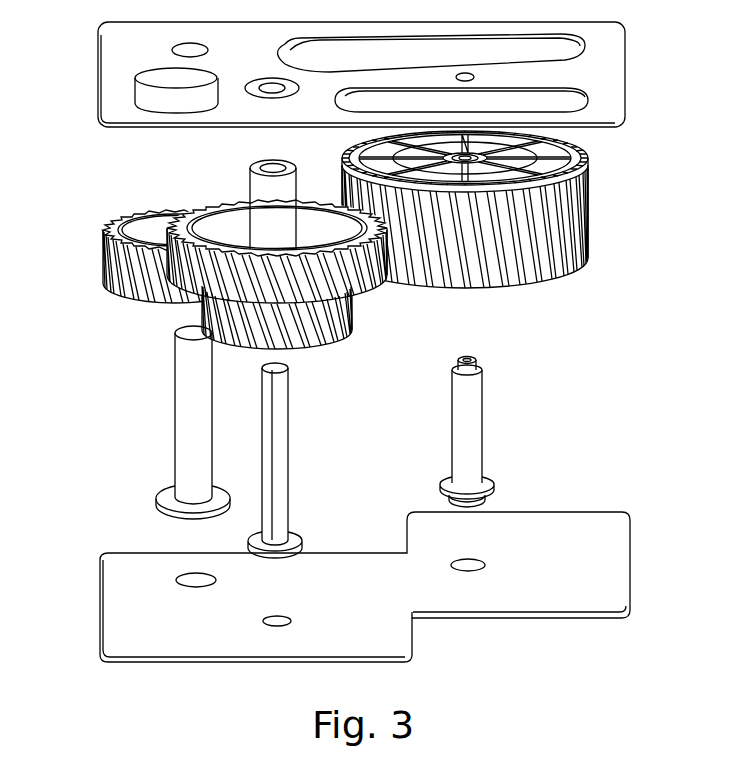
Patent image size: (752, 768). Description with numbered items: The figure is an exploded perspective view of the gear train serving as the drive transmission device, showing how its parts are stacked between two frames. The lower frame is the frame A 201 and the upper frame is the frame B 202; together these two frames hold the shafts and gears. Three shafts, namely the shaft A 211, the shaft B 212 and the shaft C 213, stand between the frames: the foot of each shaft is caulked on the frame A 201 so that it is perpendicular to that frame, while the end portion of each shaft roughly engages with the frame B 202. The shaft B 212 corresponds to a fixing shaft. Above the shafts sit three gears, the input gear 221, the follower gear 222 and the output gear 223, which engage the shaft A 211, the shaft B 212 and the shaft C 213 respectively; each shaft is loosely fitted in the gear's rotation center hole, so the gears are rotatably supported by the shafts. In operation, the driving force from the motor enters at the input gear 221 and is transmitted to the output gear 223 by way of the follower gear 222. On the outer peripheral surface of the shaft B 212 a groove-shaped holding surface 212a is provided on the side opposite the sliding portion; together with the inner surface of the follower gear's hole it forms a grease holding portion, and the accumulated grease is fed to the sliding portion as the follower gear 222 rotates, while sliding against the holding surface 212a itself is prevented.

The frame A 201 is at (595, 550).
The frame B 202 is at (605, 72).
The shaft A 211 is at (470, 402).
The shaft B 212 is at (282, 420).
The holding surface 212a is at (266, 469).
The shaft C 213 is at (186, 386).
The input gear 221 is at (565, 200).
The follower gear 222 is at (262, 181).
The output gear 223 is at (108, 280).